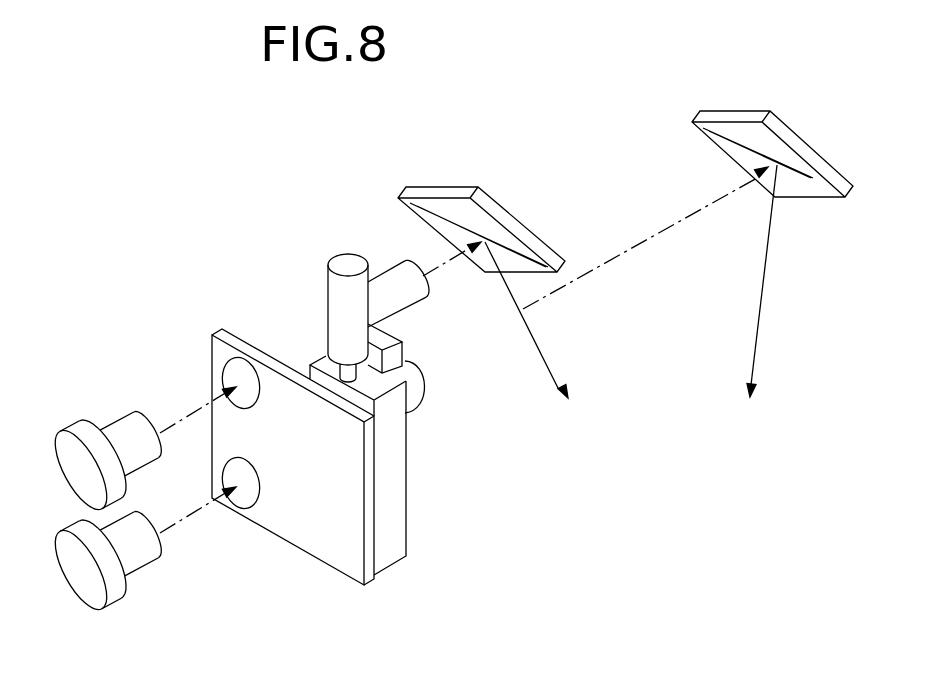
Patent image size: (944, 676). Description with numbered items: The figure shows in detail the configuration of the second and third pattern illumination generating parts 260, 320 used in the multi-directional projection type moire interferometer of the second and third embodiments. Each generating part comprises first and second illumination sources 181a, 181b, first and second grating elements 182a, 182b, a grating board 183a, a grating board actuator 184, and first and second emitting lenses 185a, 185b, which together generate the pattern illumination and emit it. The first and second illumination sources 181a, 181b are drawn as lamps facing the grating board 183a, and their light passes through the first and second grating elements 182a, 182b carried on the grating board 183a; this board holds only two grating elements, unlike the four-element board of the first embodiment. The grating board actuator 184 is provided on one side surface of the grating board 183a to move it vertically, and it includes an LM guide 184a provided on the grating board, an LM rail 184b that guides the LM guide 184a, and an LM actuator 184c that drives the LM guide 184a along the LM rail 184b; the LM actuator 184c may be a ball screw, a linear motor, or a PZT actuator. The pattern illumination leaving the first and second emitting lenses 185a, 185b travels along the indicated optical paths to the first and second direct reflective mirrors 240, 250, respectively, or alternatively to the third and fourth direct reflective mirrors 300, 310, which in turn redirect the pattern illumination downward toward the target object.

The first illumination source 181a is at (66, 463).
The second illumination source 181b is at (86, 583).
The first grating element 182a is at (223, 373).
The second grating element 182b is at (238, 500).
The grating board 183a is at (311, 537).
The grating board actuator 184 is at (311, 304).
The LM guide 184a is at (390, 490).
The LM rail 184b is at (395, 355).
The LM actuator 184c is at (333, 348).
The first emitting lens 185a is at (393, 264).
The second emitting lens 185b is at (423, 398).
The first direct reflective mirror 240 is at (508, 207).
The third direct reflective mirror 300 is at (527, 219).
The second direct reflective mirror 250 is at (791, 124).
The fourth direct reflective mirror 310 is at (796, 124).
The second pattern illumination generating part 260 is at (261, 410).
The third pattern illumination generating part 320 is at (258, 192).